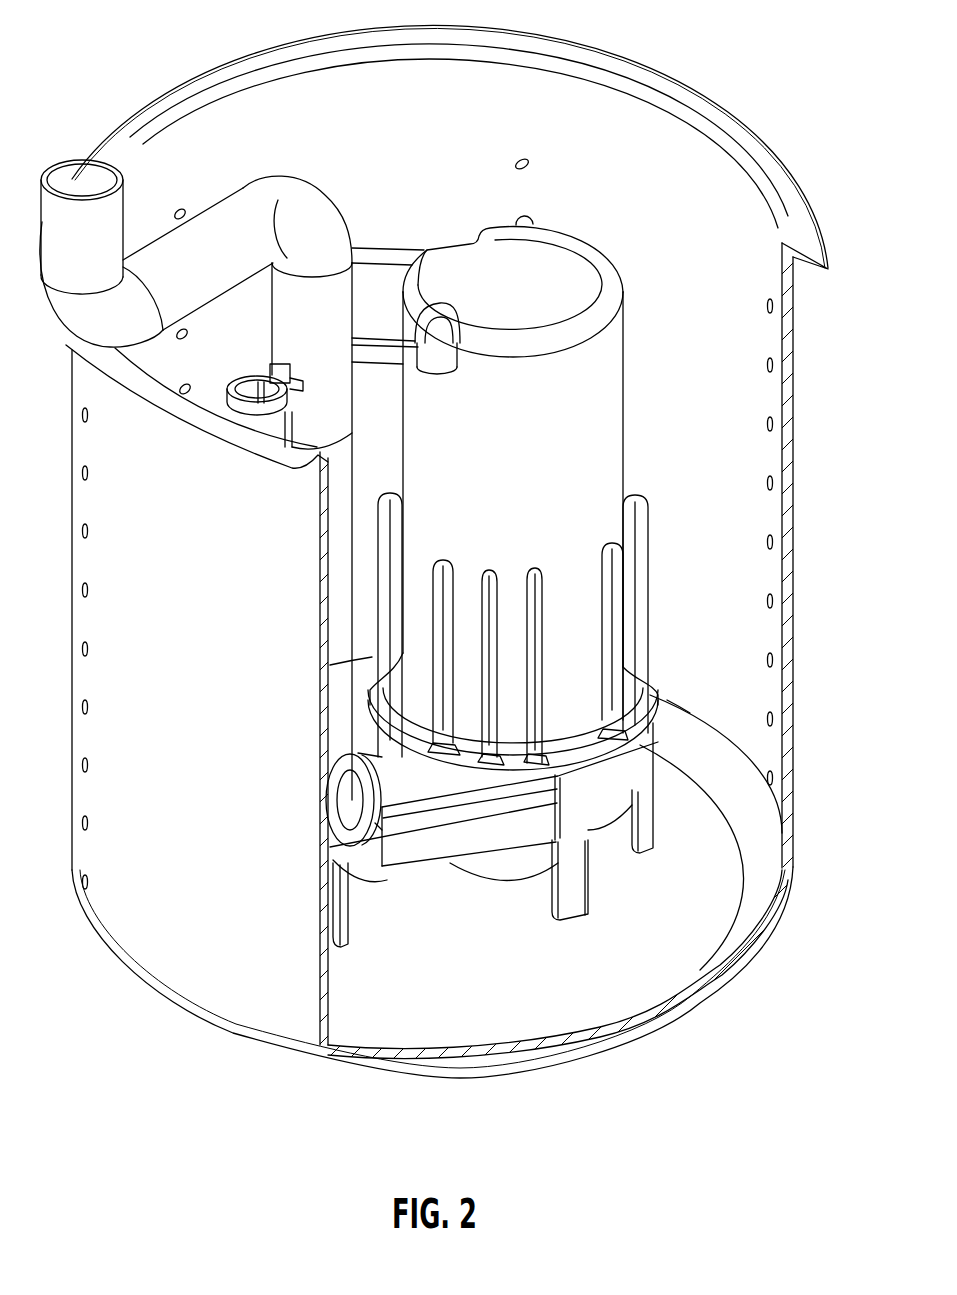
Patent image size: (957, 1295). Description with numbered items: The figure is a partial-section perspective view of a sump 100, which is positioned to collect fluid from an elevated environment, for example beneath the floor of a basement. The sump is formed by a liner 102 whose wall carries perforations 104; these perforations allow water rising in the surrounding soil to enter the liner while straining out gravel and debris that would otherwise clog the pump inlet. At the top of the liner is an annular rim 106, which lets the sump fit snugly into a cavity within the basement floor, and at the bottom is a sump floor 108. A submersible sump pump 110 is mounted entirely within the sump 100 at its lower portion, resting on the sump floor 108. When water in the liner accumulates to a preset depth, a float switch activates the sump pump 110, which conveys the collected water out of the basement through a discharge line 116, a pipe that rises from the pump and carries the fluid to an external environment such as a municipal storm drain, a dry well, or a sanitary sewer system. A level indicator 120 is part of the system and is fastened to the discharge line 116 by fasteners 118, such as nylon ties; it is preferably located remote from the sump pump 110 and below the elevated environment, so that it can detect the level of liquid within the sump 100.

The sump 100 is at (718, 70).
The liner 102 is at (631, 214).
The perforations 104 is at (767, 366).
The annular rim 106 is at (797, 228).
The sump floor 108 is at (727, 780).
The submersible sump pump 110 is at (546, 472).
The discharge line 116 is at (232, 272).
The fasteners 118 is at (333, 365).
The level indicator 120 is at (268, 417).